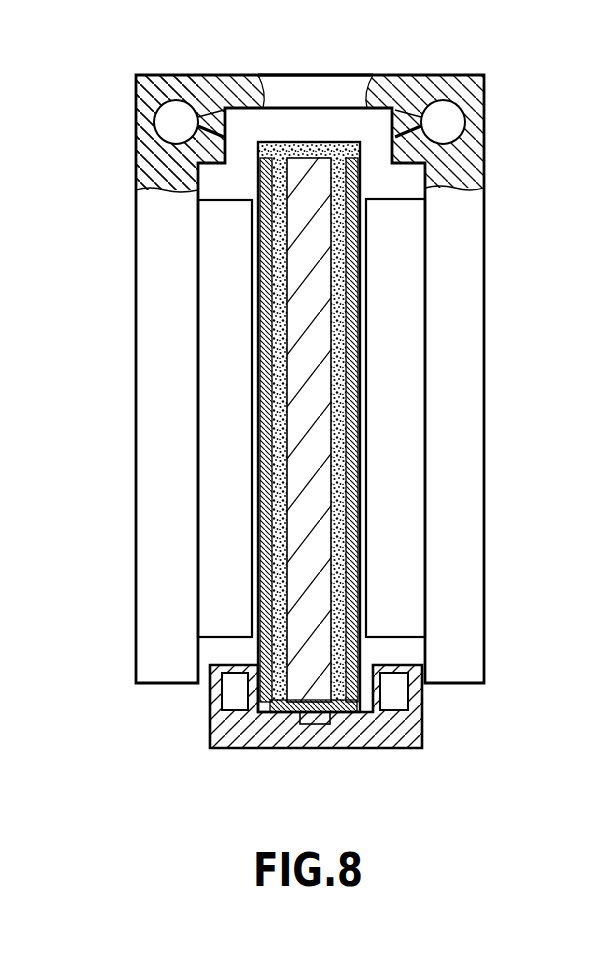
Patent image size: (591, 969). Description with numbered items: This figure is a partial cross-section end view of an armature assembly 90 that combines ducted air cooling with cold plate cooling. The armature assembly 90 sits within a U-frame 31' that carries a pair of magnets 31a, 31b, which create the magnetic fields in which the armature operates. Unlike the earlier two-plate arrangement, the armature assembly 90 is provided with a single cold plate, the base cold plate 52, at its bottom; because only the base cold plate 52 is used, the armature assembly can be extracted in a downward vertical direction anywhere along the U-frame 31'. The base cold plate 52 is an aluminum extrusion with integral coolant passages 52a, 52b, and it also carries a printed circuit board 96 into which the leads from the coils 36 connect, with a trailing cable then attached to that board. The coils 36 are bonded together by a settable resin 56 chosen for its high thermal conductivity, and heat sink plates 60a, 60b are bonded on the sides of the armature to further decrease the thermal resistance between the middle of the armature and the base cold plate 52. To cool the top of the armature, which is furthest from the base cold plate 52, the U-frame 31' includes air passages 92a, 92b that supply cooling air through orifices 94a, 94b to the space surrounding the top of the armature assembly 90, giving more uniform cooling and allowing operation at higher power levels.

The armature assembly 90 is at (323, 774).
The U-frame 31' is at (315, 64).
The magnet 31a is at (217, 463).
The magnet 31b is at (395, 418).
The air passage 92a is at (176, 123).
The air passage 92b is at (447, 119).
The orifice 94a is at (192, 117).
The orifice 94b is at (397, 117).
The coils 36 is at (313, 278).
The settable resin 56 is at (300, 605).
The heat sink plate 60a is at (260, 555).
The heat sink plate 60b is at (360, 479).
The base cold plate 52 is at (405, 750).
The coolant passage 52a is at (230, 698).
The coolant passage 52b is at (398, 697).
The printed circuit board 96 is at (257, 710).